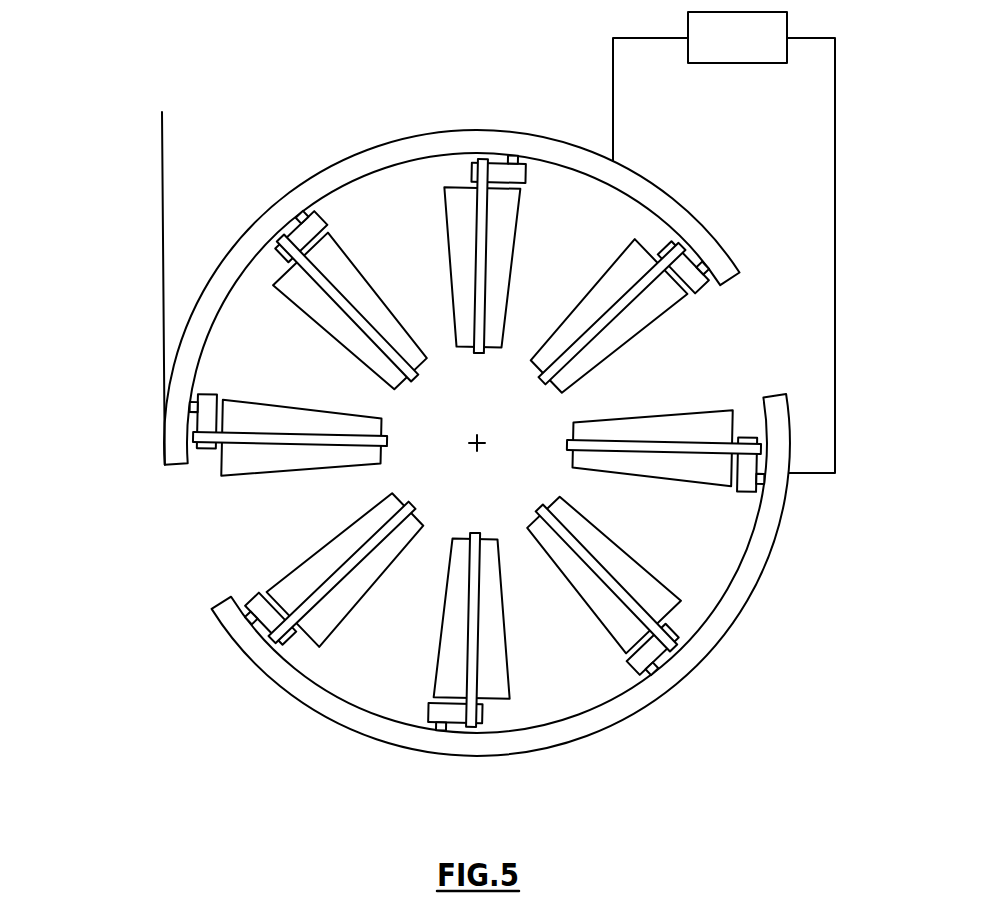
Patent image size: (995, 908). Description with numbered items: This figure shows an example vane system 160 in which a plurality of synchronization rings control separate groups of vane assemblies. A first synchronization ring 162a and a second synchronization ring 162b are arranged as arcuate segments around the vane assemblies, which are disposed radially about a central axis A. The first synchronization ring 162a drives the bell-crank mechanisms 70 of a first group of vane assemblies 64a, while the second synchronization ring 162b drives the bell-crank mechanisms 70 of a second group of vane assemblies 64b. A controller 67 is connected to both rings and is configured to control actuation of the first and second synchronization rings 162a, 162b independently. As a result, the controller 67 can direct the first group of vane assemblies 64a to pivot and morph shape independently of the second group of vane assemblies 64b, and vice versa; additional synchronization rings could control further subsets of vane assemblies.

The vane system 160 is at (150, 103).
The first synchronization ring 162a is at (345, 158).
The second synchronization ring 162b is at (748, 592).
The first group of vane assemblies 64a is at (576, 286).
The second group of vane assemblies 64b is at (676, 500).
The controller 67 is at (752, 51).
The bell-crank mechanism 70 is at (524, 177).
The central axis A is at (480, 447).